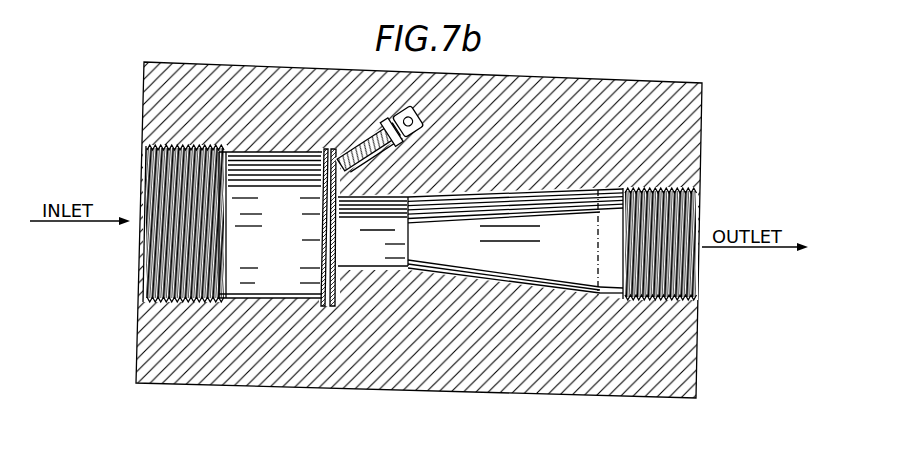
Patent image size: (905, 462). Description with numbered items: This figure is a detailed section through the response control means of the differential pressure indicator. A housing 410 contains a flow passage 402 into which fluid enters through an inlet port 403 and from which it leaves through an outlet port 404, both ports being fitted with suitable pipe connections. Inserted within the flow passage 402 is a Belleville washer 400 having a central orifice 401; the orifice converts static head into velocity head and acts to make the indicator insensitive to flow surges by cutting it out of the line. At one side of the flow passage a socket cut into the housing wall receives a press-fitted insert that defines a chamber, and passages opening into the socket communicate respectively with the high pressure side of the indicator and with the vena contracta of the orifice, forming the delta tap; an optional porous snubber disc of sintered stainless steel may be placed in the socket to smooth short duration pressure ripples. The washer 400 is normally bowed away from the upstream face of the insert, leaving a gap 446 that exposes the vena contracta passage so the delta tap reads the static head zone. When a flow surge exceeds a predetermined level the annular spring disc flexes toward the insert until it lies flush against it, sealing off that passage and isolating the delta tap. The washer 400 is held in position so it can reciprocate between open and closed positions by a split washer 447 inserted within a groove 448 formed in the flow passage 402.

The Belleville washer 400 is at (324, 197).
The central orifice 401 is at (320, 230).
The flow passage 402 is at (585, 247).
The inlet port 403 is at (158, 275).
The outlet port 404 is at (682, 216).
The housing 410 is at (682, 122).
The gap 446 is at (334, 258).
The split washer 447 is at (320, 297).
The groove 448 is at (325, 158).